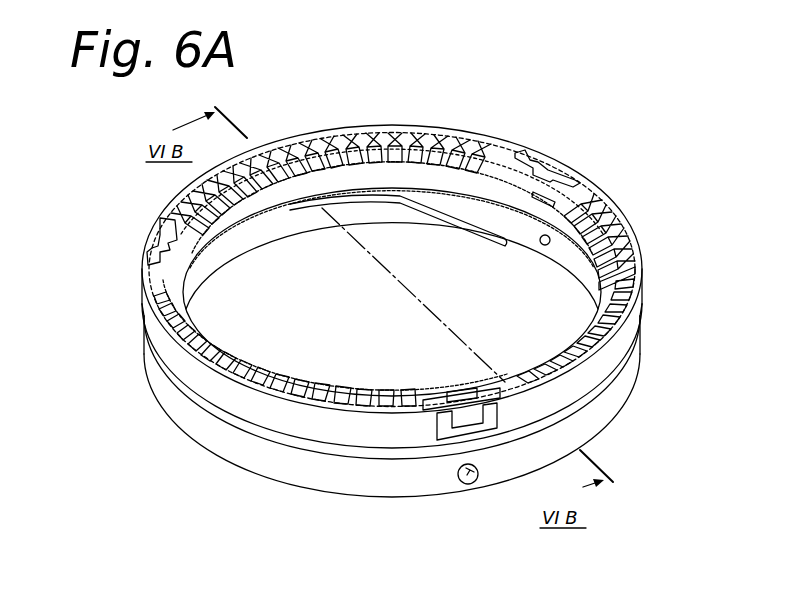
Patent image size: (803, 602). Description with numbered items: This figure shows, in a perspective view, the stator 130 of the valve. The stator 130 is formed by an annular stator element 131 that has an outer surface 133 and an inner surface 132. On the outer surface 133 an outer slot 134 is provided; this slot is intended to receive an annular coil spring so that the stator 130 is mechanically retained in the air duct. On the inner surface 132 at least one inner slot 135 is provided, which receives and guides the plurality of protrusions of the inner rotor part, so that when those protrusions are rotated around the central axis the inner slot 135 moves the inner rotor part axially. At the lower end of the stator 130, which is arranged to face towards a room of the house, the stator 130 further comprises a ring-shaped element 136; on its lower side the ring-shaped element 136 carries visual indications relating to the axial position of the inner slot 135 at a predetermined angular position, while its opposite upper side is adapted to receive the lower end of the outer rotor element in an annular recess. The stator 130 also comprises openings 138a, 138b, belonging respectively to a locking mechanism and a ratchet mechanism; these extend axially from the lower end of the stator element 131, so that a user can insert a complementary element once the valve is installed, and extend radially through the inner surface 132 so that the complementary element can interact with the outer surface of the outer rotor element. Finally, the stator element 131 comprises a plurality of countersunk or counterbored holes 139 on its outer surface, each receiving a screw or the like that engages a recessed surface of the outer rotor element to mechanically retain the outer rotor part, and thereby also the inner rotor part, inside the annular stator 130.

The stator 130 is at (570, 110).
The annular stator element 131 is at (604, 425).
The inner surface 132 is at (257, 243).
The outer surface 133 is at (160, 405).
The outer slot 134 is at (610, 382).
The inner slot 135 is at (405, 195).
The ring-shaped element 136 is at (643, 258).
The opening of a locking mechanism 138a is at (460, 392).
The opening of a ratchet mechanism 138b is at (554, 175).
The countersunk or counterbored hole 139 is at (460, 484).